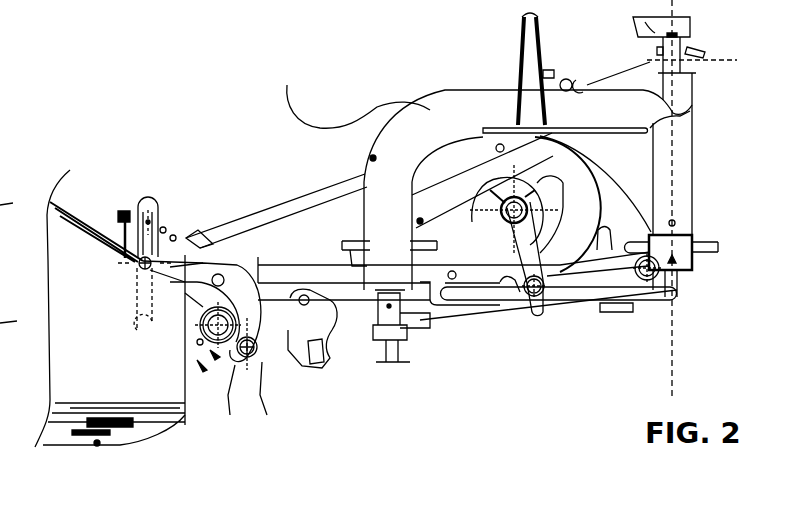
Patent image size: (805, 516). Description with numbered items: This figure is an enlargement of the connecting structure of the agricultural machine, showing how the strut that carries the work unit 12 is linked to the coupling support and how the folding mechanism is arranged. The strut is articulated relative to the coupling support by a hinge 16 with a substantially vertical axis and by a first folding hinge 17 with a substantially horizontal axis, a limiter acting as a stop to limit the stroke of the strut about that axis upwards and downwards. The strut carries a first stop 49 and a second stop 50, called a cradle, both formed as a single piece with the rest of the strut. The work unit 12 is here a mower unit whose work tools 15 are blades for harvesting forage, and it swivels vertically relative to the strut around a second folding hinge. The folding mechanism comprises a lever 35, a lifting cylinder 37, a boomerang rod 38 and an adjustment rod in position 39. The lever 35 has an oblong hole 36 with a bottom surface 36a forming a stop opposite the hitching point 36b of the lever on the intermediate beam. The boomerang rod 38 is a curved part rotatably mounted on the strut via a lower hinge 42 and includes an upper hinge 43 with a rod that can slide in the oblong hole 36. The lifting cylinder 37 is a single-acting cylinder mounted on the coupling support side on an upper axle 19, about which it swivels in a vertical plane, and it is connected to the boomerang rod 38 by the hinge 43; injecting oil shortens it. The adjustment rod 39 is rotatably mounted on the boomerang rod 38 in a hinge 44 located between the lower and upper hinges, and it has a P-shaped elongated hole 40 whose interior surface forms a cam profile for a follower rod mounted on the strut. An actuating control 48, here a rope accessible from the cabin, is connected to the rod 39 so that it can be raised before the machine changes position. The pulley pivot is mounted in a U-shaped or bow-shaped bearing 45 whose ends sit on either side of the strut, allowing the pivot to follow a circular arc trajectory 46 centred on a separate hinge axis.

The work unit 12 is at (186, 416).
The work tools 15 is at (108, 440).
The hinge 16 is at (673, 185).
The first folding hinge 17 is at (647, 280).
The upper axle 19 is at (673, 62).
The lever 35 is at (138, 197).
The oblong hole 36 is at (145, 198).
The bottom surface 36a is at (158, 198).
The hitching point 36b is at (137, 328).
The lifting cylinder 37 is at (240, 220).
The boomerang rod 38 is at (268, 298).
The adjustment rod in position 39 is at (454, 309).
The P-shaped elongated hole 40 is at (488, 300).
The lower hinge 42 is at (250, 358).
The upper hinge 43 is at (137, 263).
The hinge 44 is at (173, 276).
The bearing 45 is at (545, 258).
The circular arc trajectory 46 is at (575, 221).
The actuating control 48 is at (295, 113).
The first stop 49 is at (327, 357).
The second stop 50 is at (605, 230).